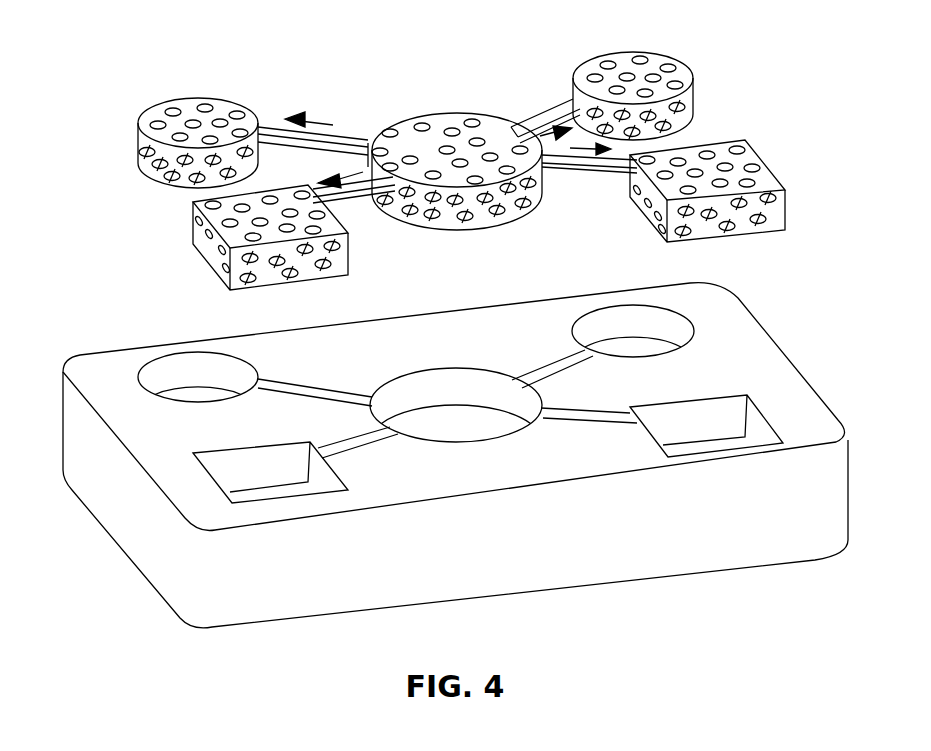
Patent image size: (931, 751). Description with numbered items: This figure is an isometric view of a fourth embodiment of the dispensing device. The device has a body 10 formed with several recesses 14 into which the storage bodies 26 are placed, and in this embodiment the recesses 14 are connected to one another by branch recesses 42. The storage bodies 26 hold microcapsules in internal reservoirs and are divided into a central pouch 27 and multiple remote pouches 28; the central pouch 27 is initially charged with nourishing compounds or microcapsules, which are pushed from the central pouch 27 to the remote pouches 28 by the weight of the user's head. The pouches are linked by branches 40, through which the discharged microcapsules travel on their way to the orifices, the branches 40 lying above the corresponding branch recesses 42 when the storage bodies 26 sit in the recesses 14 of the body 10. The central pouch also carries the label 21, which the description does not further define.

The body 10 is at (586, 558).
The recess 14 is at (227, 365).
The central module 21 is at (450, 178).
The storage body 26 is at (192, 108).
The central pouch 27 is at (452, 147).
The remote pouches 28 is at (137, 147).
The branches 40 is at (270, 122).
The branch recesses 42 is at (307, 383).